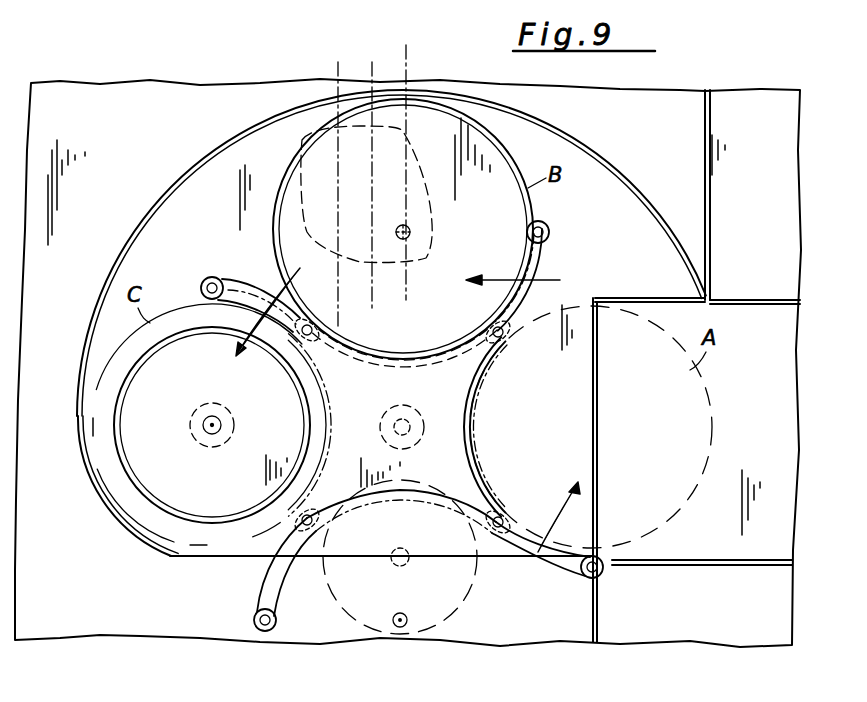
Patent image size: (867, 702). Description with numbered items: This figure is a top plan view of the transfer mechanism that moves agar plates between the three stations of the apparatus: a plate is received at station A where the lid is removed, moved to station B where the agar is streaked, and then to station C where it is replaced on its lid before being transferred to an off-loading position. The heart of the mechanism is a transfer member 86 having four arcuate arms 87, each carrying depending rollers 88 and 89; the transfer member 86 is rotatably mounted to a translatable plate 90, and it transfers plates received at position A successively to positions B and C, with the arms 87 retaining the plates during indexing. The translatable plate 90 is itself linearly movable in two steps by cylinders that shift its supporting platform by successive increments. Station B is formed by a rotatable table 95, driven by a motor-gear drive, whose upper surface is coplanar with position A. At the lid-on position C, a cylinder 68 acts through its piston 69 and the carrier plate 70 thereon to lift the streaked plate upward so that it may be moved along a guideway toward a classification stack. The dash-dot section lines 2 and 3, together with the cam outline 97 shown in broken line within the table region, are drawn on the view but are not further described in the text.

The section line 2- 2 is at (370, 173).
The section line 3- 3 is at (336, 183).
The cylinder 68 is at (197, 440).
The piston 69 is at (232, 416).
The carrier plate 70 is at (128, 446).
The transfer member 86 is at (406, 478).
The arcuate arms 87 is at (249, 286).
The rollers 88 is at (549, 232).
The rollers 89 is at (504, 338).
The translatable plate 90 is at (490, 618).
The rotatable table 95 is at (302, 160).
The cam 97 is at (374, 191).